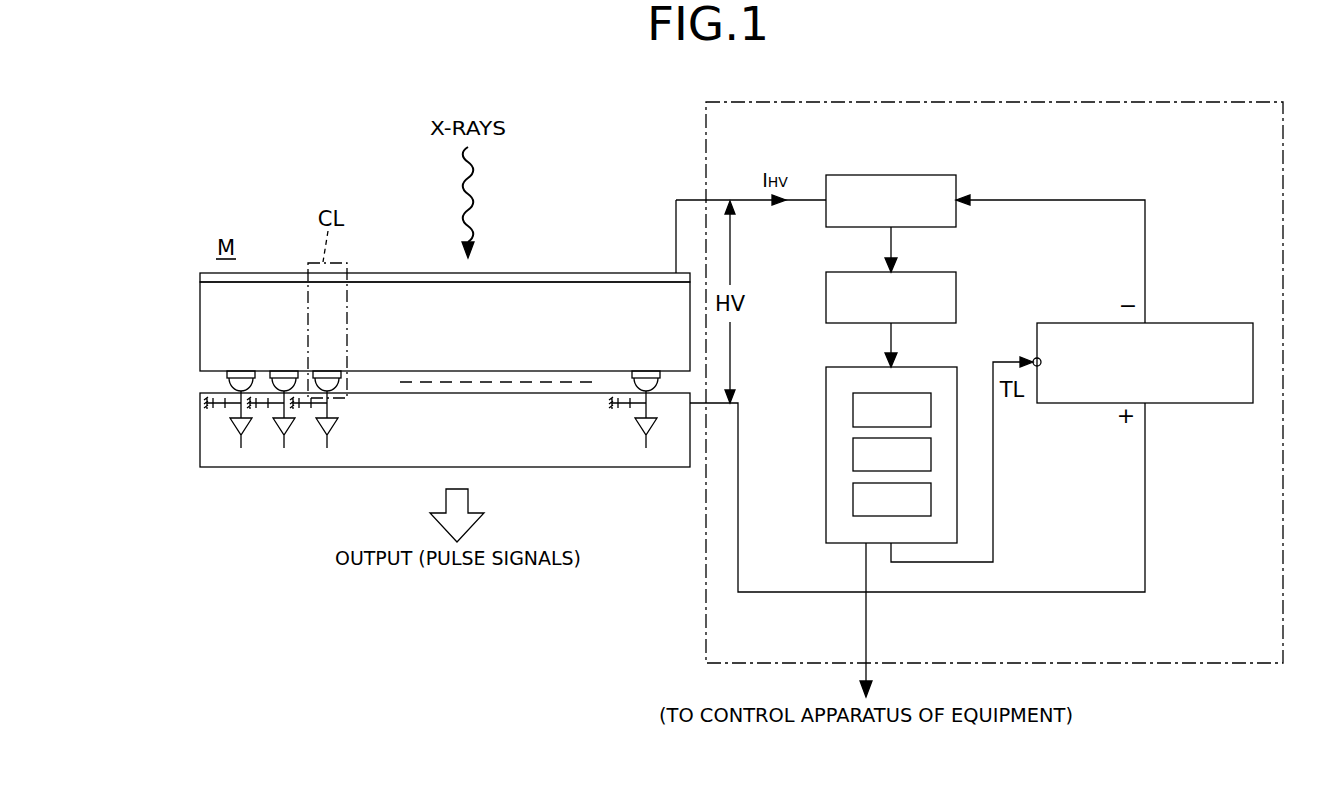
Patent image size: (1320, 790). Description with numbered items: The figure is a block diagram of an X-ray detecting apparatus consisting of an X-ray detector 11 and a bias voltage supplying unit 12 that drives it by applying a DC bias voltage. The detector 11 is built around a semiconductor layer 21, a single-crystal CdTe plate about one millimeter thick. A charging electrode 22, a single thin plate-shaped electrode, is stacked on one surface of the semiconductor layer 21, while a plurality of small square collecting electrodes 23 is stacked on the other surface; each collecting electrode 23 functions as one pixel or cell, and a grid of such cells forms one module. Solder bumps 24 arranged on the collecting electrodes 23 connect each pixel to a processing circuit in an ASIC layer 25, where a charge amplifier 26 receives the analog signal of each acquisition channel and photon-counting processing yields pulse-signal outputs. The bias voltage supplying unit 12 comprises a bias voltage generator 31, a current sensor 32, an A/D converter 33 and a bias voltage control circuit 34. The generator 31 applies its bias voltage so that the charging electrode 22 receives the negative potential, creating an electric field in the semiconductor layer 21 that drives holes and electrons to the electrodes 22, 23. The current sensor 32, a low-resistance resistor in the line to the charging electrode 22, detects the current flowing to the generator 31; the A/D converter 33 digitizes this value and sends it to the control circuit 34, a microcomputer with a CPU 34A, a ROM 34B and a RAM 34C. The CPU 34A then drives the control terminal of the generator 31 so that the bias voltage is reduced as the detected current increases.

The X-ray detector 11 is at (183, 254).
The bias voltage supplying unit 12 is at (706, 145).
The semiconductor layer 21 is at (198, 325).
The charging electrode 22 is at (198, 278).
The collecting electrodes 23 is at (226, 377).
The solder bumps 24 is at (226, 387).
The ASIC layer 25 is at (198, 452).
The charge amplifier 26 is at (232, 423).
The bias voltage generator 31 is at (1176, 323).
The current sensor 32 is at (891, 175).
The A/D converter 33 is at (958, 285).
The bias voltage control circuit 34 is at (826, 380).
The CPU 34A is at (853, 412).
The ROM 34B is at (853, 457).
The RAM 34C is at (853, 503).